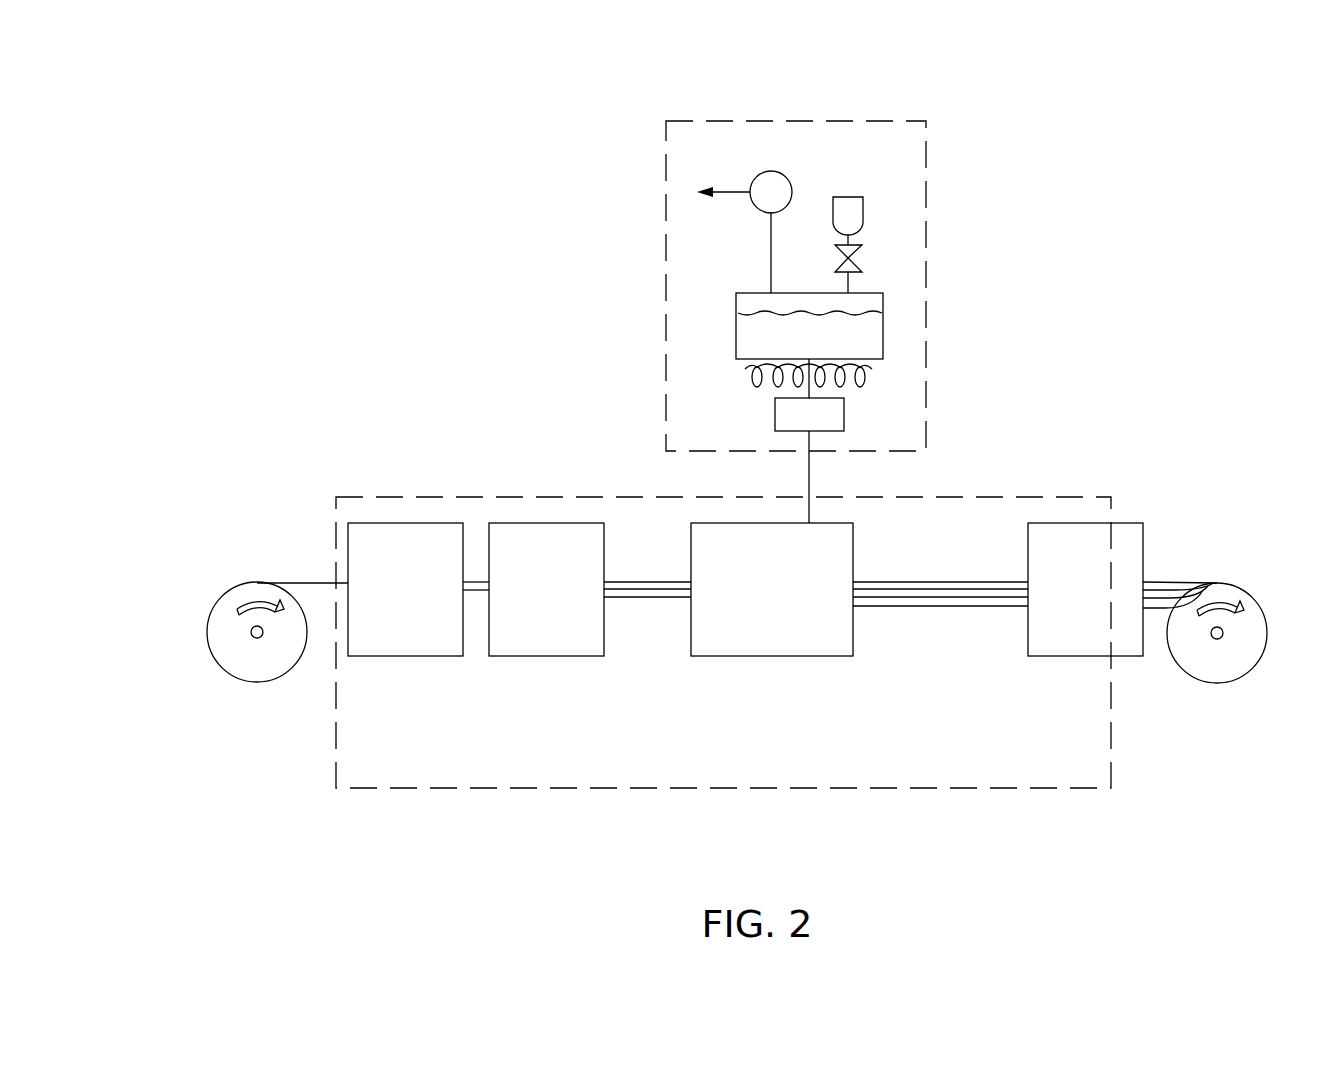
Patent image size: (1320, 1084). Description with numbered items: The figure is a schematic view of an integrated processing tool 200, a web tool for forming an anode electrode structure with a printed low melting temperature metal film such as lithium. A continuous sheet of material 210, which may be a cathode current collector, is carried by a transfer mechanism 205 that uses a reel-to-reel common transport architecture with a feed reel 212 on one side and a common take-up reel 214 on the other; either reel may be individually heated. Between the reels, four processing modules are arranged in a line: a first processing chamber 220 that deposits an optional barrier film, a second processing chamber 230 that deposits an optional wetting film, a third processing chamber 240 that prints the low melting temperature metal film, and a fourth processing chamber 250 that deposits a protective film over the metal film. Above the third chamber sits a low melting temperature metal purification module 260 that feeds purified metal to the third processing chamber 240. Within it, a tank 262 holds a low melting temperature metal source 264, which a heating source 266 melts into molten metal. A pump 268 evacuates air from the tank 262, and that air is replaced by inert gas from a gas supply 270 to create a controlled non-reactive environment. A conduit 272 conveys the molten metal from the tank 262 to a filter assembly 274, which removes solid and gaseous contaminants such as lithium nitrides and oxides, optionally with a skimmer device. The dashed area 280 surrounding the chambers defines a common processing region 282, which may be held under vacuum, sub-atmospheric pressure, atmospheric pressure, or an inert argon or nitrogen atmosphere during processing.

The integrated processing tool 200 is at (398, 338).
The transfer mechanism 205 is at (242, 573).
The continuous sheet of material 210 is at (287, 583).
The feed reel 212 is at (255, 683).
The take-up reel 214 is at (1222, 683).
The first processing chamber 220 is at (416, 523).
The second processing chamber 230 is at (549, 523).
The third processing chamber 240 is at (761, 657).
The fourth processing chamber 250 is at (1082, 523).
The low melting temperature metal purification module 260 is at (926, 133).
The tank 262 is at (883, 325).
The low melting temperature metal source 264 is at (791, 349).
The heating source 266 is at (872, 375).
The pump 268 is at (771, 171).
The gas supply 270 is at (863, 213).
The conduit 272 is at (773, 395).
The filter assembly 274 is at (844, 412).
The area 280 is at (935, 790).
The common processing region 282 is at (527, 709).